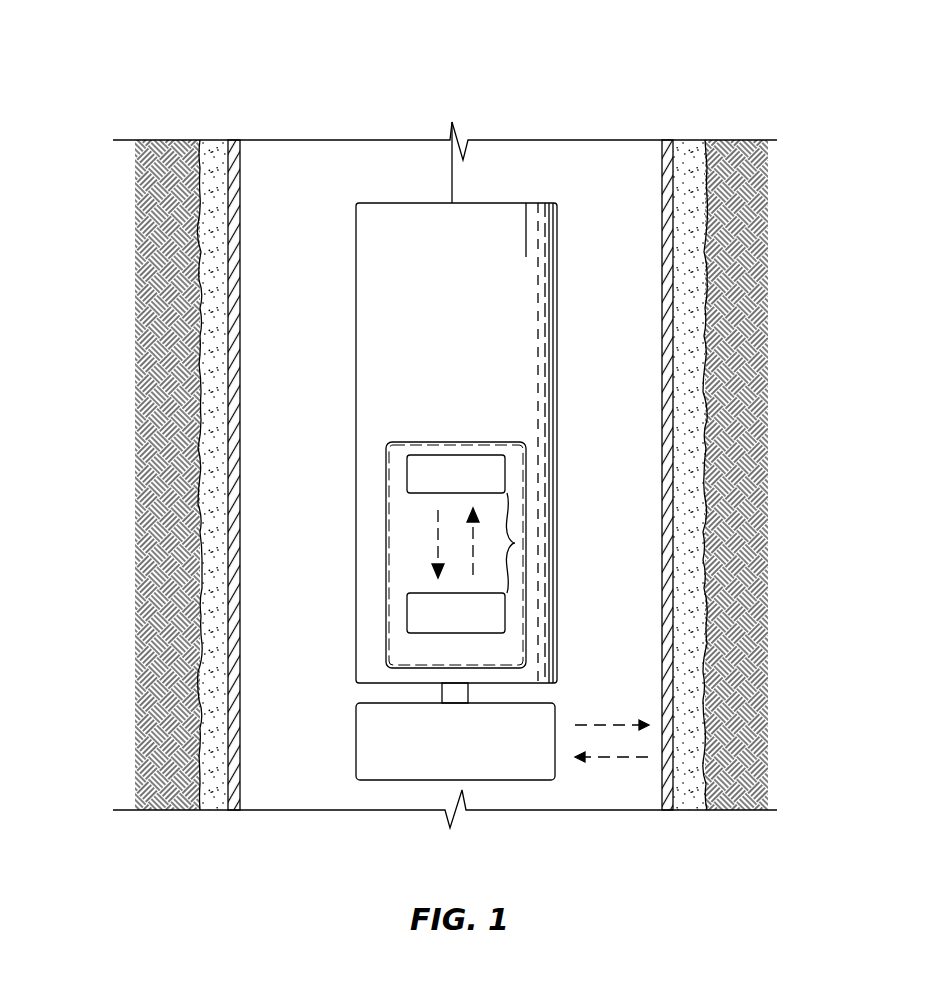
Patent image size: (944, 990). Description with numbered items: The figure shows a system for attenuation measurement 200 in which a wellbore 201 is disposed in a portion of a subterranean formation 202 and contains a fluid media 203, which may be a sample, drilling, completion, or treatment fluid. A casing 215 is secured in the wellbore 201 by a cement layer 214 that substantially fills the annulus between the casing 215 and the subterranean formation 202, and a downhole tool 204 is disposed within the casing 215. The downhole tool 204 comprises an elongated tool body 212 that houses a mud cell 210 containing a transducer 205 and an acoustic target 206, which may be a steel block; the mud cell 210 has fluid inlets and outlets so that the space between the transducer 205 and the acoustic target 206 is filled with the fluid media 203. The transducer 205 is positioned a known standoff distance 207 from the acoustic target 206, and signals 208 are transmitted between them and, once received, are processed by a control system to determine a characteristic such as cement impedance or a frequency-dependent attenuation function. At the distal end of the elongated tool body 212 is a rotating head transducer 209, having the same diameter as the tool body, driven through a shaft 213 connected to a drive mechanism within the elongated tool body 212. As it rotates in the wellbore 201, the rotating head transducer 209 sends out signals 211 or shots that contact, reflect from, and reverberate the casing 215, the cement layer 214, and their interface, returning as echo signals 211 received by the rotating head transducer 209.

The system for attenuation measurement 200 is at (153, 68).
The wellbore 201 is at (585, 160).
The subterranean formation 202 is at (750, 200).
The fluid media 203 is at (291, 188).
The downhole tool 204 is at (505, 210).
The transducer 205 is at (456, 474).
The acoustic target 206 is at (456, 613).
The standoff distance 207 is at (513, 543).
The signals 208 is at (470, 530).
The rotating head transducer 209 is at (358, 757).
The mud cell 210 is at (524, 453).
The signals 211 is at (612, 757).
The elongated tool body 212 is at (523, 310).
The shaft 213 is at (443, 690).
The cement layer 214 is at (690, 150).
The casing 215 is at (670, 138).